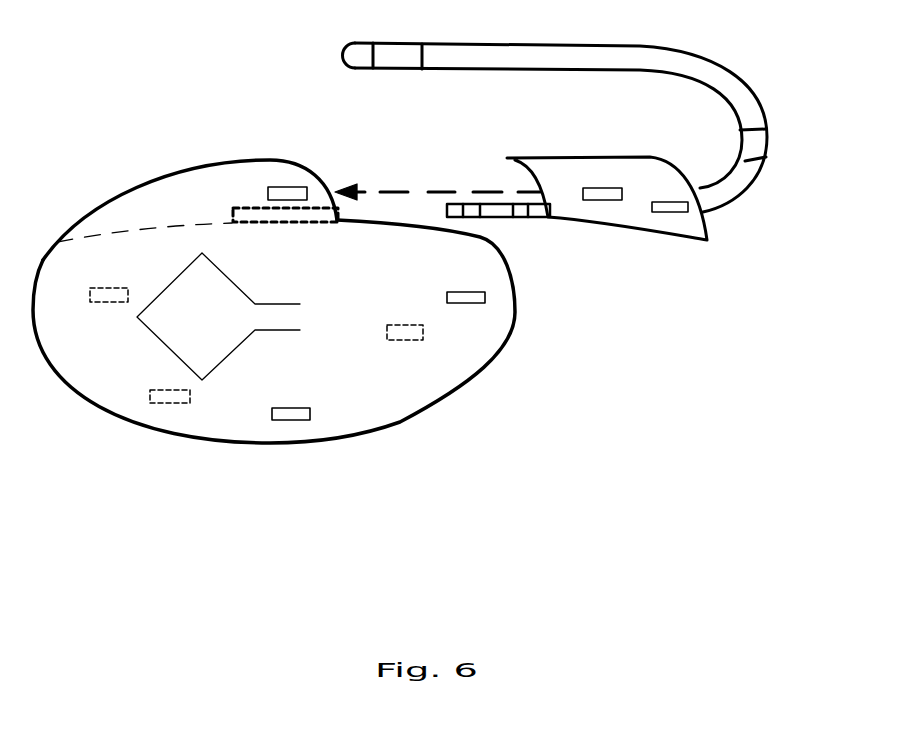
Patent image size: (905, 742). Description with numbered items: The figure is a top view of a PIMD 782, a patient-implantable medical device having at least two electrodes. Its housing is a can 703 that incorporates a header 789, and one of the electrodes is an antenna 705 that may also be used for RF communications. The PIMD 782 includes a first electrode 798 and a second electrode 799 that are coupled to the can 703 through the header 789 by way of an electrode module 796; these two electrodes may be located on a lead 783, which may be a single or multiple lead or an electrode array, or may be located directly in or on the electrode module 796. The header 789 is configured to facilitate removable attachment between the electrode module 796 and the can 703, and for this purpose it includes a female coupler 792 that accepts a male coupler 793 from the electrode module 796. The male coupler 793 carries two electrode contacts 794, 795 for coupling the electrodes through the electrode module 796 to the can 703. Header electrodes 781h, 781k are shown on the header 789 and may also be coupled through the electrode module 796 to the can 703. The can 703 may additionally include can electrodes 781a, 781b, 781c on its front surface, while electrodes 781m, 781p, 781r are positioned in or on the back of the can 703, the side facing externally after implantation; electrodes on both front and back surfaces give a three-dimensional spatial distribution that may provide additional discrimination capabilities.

The PIMD 782 is at (93, 69).
The can 703 is at (73, 383).
The header 789 is at (268, 160).
The can electrode 781a is at (286, 187).
The female coupler 792 is at (260, 206).
The antenna 705 is at (242, 288).
The electrode 781m is at (113, 287).
The electrode 781p is at (175, 389).
The can electrode 781c is at (295, 407).
The electrode 781r is at (407, 327).
The can electrode 781b is at (470, 291).
The electrode contact 794 is at (455, 190).
The male coupler 793 is at (497, 218).
The electrode contact 795 is at (513, 204).
The electrode module 796 is at (595, 156).
The header electrode 781h is at (607, 188).
The header electrode 781k is at (673, 201).
The lead 783 is at (565, 42).
The first electrode 798 is at (400, 52).
The second electrode 799 is at (768, 153).